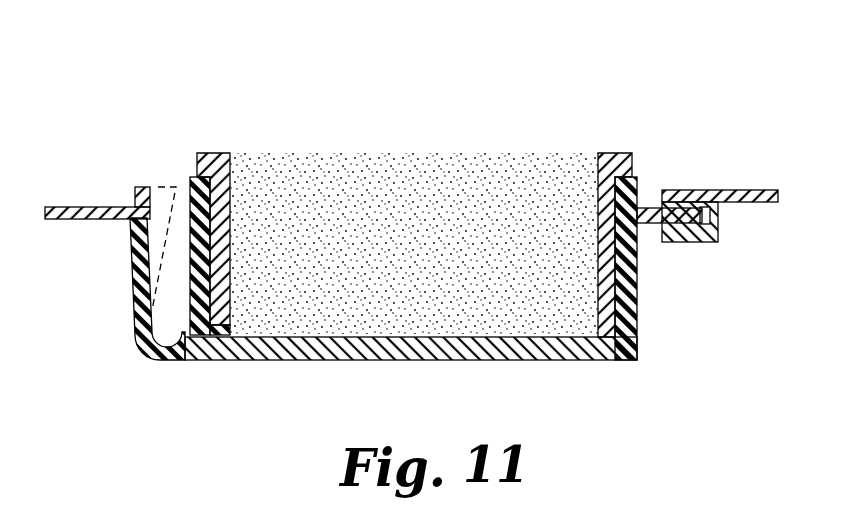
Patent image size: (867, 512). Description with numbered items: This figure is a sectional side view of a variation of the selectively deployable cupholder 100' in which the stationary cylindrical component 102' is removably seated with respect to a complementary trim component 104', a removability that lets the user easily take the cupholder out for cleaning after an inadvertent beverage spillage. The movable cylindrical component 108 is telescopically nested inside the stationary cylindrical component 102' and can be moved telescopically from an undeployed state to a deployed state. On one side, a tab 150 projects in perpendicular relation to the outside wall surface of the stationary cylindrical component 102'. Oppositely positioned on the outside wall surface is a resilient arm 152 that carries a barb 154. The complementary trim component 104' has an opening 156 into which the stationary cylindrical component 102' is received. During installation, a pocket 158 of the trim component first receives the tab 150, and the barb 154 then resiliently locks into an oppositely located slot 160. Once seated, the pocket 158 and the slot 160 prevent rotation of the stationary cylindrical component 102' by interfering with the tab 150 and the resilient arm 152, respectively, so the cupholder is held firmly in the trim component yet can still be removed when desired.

The selectively deployable cupholder 100' is at (412, 198).
The stationary cylindrical component 102' is at (484, 256).
The complementary trim component 104' is at (728, 143).
The movable cylindrical component 108 is at (561, 205).
The tab 150 is at (705, 216).
The resilient arm 152 is at (131, 240).
The barb 154 is at (127, 220).
The opening 156 is at (150, 212).
The pocket 158 is at (688, 230).
The slot 160 is at (152, 212).